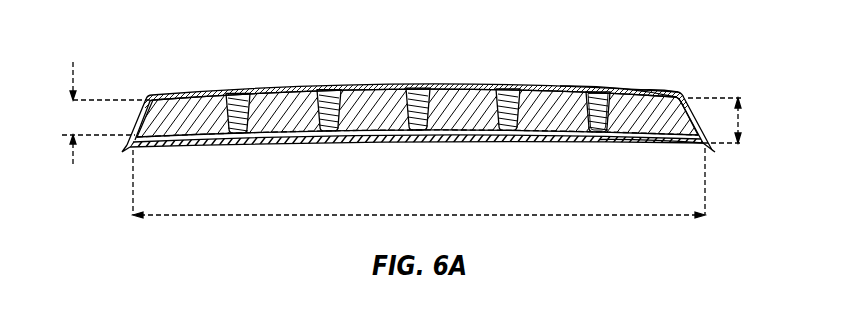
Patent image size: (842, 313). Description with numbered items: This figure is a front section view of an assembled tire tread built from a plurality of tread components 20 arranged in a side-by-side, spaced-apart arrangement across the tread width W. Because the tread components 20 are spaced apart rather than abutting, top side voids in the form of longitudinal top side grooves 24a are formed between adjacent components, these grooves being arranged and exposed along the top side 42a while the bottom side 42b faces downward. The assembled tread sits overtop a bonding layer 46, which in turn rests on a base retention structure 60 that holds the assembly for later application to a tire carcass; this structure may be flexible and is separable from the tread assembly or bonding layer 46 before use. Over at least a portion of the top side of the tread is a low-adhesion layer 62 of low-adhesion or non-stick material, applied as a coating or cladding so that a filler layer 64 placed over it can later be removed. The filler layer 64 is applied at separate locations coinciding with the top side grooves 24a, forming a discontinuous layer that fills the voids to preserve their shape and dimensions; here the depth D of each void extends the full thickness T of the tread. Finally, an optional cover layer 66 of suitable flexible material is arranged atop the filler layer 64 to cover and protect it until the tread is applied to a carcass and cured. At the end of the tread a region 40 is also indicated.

The tread component 20 is at (550, 102).
The first end edge 40 is at (147, 110).
The top side 42a is at (211, 100).
The bottom side 42b is at (168, 138).
The bonding layer 46 is at (622, 138).
The base retention structure 60 is at (665, 145).
The low-adhesion layer 62 is at (640, 88).
The filler layer 64 is at (597, 90).
The cover layer 66 is at (647, 87).
The longitudinal top side groove 24a is at (592, 135).
The depth of the void D is at (73, 82).
The tread width W is at (420, 213).
The tread thickness T is at (747, 117).